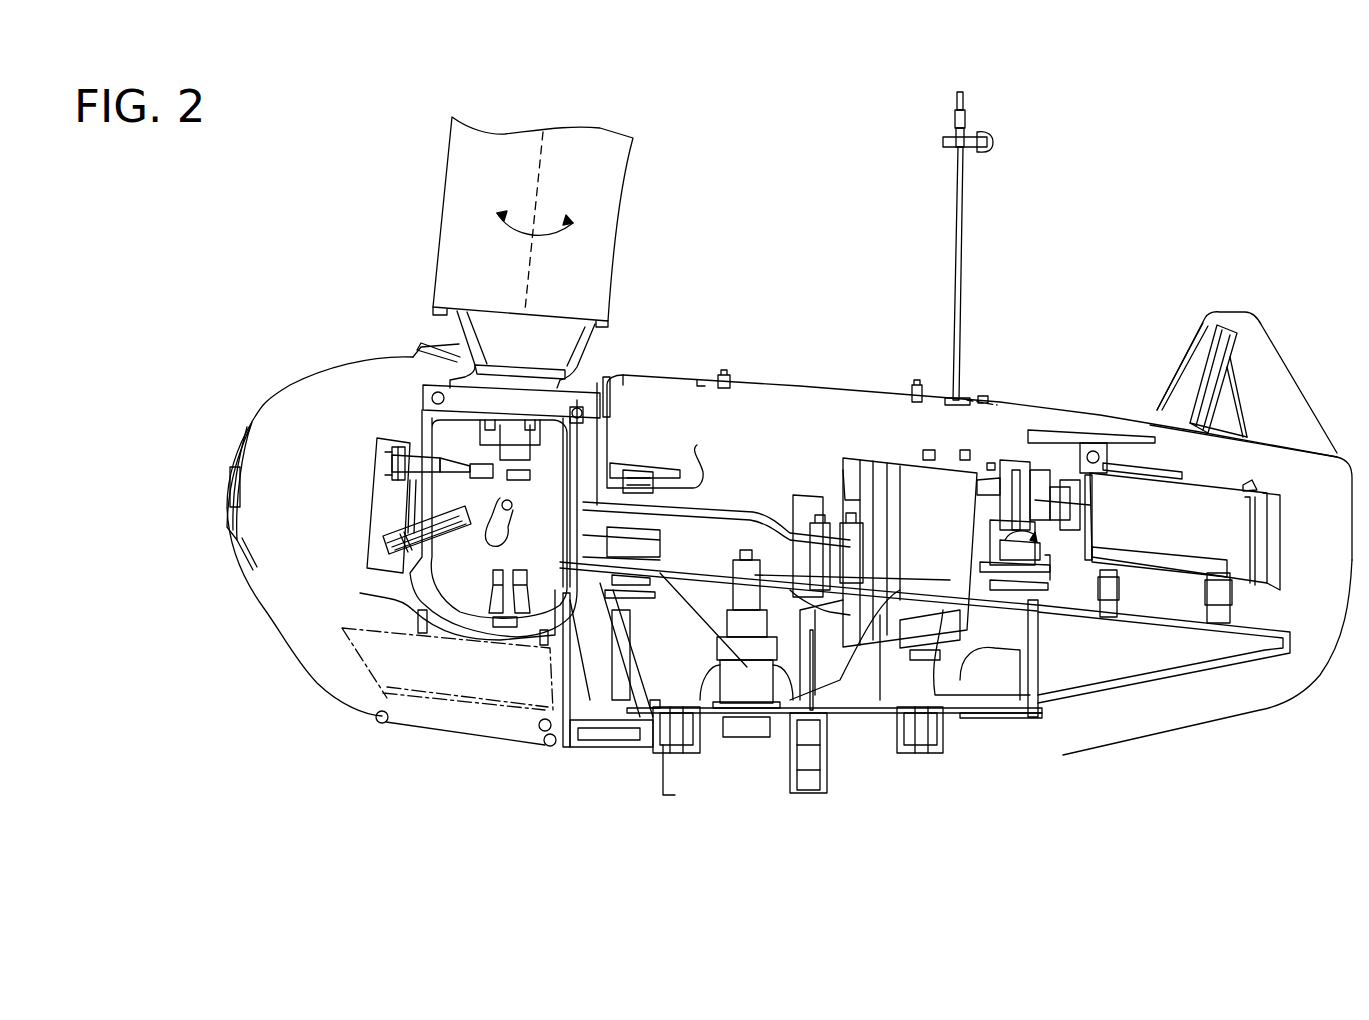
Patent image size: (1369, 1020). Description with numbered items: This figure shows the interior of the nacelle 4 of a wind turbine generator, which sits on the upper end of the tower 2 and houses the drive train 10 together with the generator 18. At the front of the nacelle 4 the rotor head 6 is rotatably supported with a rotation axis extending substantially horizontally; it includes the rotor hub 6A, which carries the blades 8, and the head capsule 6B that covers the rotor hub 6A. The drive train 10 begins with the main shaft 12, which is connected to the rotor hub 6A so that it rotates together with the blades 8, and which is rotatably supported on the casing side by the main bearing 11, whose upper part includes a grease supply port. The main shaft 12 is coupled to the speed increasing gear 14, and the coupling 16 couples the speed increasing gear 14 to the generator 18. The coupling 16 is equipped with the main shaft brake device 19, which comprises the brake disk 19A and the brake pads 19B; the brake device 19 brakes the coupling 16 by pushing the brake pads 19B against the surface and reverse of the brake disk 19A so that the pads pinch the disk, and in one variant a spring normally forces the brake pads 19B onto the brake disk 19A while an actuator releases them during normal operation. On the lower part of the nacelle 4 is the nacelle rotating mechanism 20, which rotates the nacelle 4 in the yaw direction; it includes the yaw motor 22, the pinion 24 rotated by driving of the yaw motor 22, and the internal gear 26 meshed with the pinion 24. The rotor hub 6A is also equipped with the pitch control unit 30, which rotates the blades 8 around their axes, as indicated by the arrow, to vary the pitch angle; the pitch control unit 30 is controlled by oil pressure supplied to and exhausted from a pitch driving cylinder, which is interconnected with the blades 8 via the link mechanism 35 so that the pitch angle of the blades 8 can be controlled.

The tower 2 is at (915, 800).
The nacelle 4 is at (1098, 412).
The rotor head 6 is at (212, 420).
The rotor hub 6A is at (402, 600).
The head capsule 6B is at (320, 688).
The blade 8 is at (460, 182).
The drive train 10 is at (786, 408).
The main bearing 11 is at (690, 478).
The main shaft 12 is at (704, 500).
The speed increasing gear 14 is at (920, 477).
The coupling 16 is at (1053, 508).
The generator 18 is at (1215, 493).
The main shaft brake device 19 is at (1040, 570).
The brake disk 19A is at (1003, 462).
The brake pads 19B is at (1025, 555).
The nacelle rotating mechanism 20 is at (740, 778).
The yaw motor 22 is at (716, 660).
The pinion 24 is at (775, 735).
The internal gear 26 is at (706, 735).
The pitch control unit 30 is at (522, 493).
The link mechanism 35 is at (456, 487).